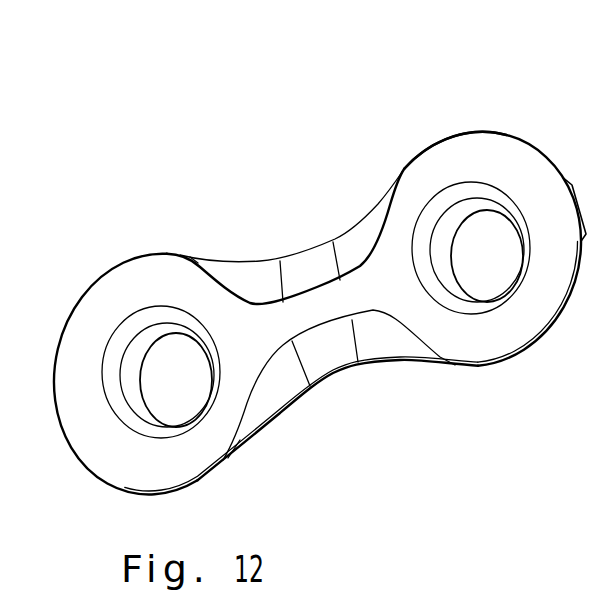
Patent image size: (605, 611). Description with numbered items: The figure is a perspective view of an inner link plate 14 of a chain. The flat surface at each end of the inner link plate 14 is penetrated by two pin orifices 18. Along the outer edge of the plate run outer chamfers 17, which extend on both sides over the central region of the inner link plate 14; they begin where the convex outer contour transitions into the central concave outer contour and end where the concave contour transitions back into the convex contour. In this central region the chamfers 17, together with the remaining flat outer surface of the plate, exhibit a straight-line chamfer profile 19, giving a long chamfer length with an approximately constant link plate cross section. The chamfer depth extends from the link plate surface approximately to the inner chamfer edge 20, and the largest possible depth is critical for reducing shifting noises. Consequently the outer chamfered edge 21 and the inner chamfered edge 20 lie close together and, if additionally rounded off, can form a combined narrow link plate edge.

The inner link plate 14 is at (168, 277).
The outer chamfers 17 is at (244, 269).
The pin orifices 18 is at (490, 232).
The straight-line chamfer profile 19 is at (317, 284).
The inner chamfer edge 20 is at (356, 367).
The outer chamfered edge 21 is at (334, 365).